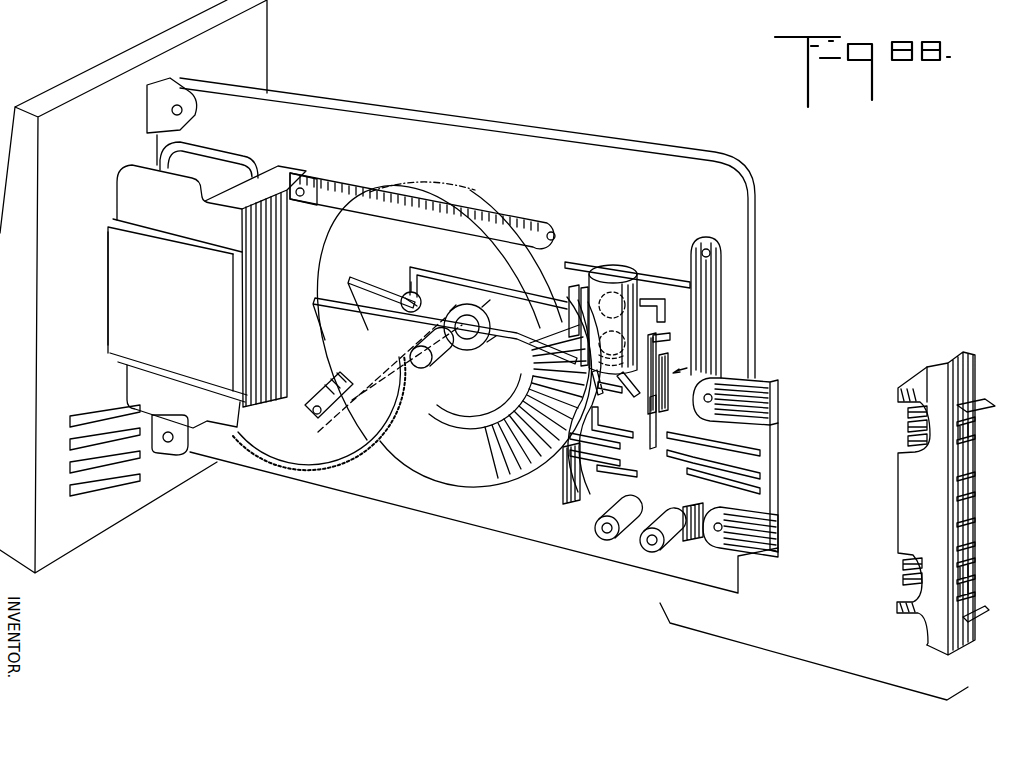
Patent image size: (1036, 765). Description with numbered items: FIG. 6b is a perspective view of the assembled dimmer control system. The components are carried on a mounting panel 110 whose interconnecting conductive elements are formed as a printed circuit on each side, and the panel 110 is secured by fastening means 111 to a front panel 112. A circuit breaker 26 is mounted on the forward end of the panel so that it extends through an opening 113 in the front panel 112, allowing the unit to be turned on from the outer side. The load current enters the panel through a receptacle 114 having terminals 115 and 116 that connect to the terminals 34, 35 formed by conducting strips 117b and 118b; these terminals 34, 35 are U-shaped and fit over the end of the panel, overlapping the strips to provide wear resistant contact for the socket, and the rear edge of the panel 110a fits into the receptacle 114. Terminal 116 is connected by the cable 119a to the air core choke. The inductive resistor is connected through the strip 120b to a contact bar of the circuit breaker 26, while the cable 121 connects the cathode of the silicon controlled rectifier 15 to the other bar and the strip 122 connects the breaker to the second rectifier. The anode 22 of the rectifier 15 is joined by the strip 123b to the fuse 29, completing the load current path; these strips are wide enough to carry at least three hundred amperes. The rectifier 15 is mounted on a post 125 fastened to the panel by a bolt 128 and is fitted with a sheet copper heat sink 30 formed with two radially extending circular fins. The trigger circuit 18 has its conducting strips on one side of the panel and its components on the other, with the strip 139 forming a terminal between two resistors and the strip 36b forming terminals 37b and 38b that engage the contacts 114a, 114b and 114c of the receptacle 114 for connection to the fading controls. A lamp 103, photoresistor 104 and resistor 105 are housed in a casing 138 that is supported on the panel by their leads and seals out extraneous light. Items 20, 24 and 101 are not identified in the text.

The silicon controlled rectifier 15 is at (432, 408).
The trigger circuit 18 is at (680, 372).
The lever arms 20 is at (393, 365).
The anode 22 is at (477, 311).
The shaft 24 is at (420, 392).
The circuit breaker 26 is at (173, 315).
The fuse 29 is at (632, 548).
The heat sink 30 is at (450, 469).
The terminal 34 is at (770, 408).
The terminal 35 is at (779, 548).
The terminal strip 36b is at (713, 440).
The terminal 37b is at (758, 472).
The terminal 38b is at (762, 498).
The circuit board 101 is at (779, 443).
The lamp 103 is at (640, 292).
The photoresistor 104 is at (654, 336).
The resistor 105 is at (622, 365).
The panel 110 is at (350, 113).
The rear edge of the panel 110a is at (779, 483).
The fastening means 111 is at (175, 98).
The front panel 112 is at (98, 520).
The opening 113 is at (107, 302).
The receptacle 114 is at (970, 380).
The contact 114a is at (974, 478).
The contact 114b is at (975, 500).
The contact 114c is at (975, 525).
The terminal 115 is at (992, 408).
The terminal 116 is at (992, 590).
The conducting strip 117b is at (722, 376).
The conducting strip 118b is at (700, 537).
The cable 119a is at (977, 612).
The strip 120b is at (533, 226).
The cable 121 is at (360, 448).
The strip 122 is at (313, 407).
The strip 123b is at (566, 481).
The post 125 is at (455, 300).
The bolt 128 is at (405, 297).
The casing 138 is at (627, 266).
The strip 139 is at (671, 373).